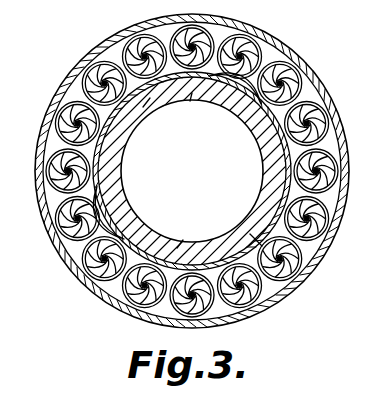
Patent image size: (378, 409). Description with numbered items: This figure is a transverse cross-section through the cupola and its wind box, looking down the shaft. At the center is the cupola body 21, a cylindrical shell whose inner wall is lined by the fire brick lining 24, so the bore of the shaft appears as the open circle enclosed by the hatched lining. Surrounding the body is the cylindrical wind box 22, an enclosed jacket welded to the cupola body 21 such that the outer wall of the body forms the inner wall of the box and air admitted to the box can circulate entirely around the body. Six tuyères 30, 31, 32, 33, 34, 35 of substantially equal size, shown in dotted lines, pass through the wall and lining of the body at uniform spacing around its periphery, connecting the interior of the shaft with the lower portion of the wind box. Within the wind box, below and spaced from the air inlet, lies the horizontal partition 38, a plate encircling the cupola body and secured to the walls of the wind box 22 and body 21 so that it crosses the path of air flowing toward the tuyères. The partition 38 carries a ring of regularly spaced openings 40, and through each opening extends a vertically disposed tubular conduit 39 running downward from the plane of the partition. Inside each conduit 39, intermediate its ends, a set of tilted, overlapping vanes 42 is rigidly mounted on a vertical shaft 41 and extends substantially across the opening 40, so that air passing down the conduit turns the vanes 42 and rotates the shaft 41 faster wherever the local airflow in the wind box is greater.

The cupola body 21 is at (131, 139).
The wind box 22 is at (110, 43).
The fire brick lining 24 is at (190, 101).
The tuyère 30 is at (143, 107).
The tuyère 31 is at (224, 80).
The tuyère 32 is at (269, 158).
The tuyère 33 is at (250, 234).
The tuyère 34 is at (183, 240).
The tuyère 35 is at (97, 191).
The partition 38 is at (308, 93).
The tubular conduit 39 is at (97, 76).
The opening 40 is at (293, 92).
The vertical shaft 41 is at (103, 84).
The tilted vane 42 is at (100, 81).